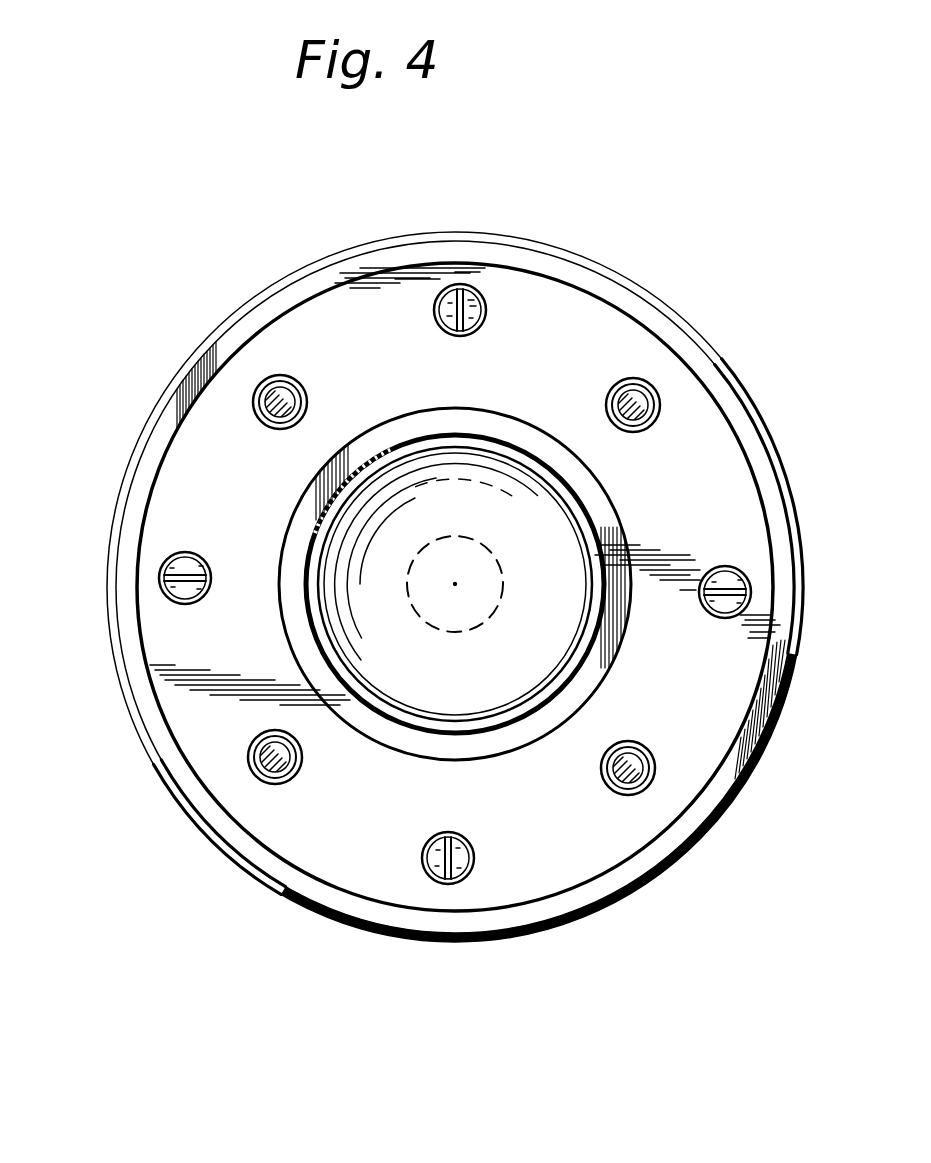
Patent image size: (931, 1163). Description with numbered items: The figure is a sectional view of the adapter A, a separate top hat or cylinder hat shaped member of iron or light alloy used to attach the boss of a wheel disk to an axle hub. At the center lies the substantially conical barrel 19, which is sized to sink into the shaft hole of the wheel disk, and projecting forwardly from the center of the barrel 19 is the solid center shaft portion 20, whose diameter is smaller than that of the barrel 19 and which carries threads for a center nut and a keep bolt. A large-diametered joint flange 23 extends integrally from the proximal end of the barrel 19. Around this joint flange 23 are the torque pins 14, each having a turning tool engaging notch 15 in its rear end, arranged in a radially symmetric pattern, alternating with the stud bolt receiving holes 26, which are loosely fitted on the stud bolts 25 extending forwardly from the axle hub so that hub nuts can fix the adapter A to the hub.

The torque pins 14 is at (445, 318).
The turning tool engaging notches 15 is at (461, 292).
The barrel 19 is at (447, 690).
The center shaft portion 20 is at (499, 568).
The joint flange 23 is at (572, 870).
The stud bolts 25 is at (292, 390).
The stud bolt receiving holes 26 is at (262, 420).
The adapter A is at (777, 432).